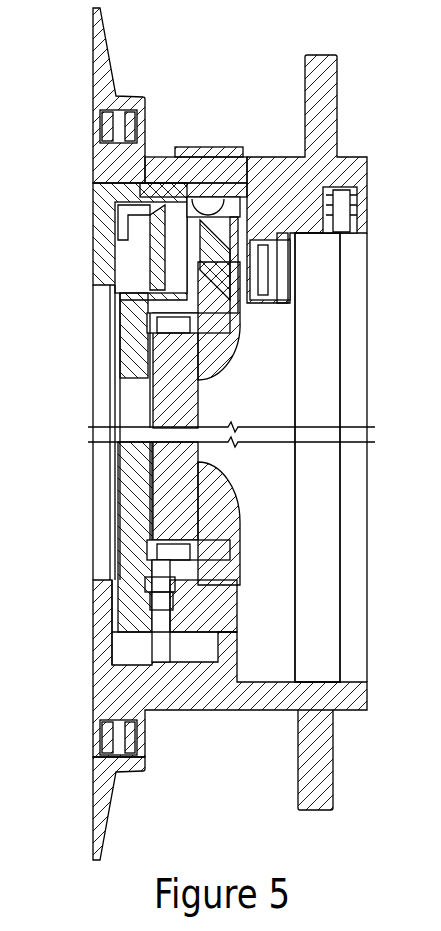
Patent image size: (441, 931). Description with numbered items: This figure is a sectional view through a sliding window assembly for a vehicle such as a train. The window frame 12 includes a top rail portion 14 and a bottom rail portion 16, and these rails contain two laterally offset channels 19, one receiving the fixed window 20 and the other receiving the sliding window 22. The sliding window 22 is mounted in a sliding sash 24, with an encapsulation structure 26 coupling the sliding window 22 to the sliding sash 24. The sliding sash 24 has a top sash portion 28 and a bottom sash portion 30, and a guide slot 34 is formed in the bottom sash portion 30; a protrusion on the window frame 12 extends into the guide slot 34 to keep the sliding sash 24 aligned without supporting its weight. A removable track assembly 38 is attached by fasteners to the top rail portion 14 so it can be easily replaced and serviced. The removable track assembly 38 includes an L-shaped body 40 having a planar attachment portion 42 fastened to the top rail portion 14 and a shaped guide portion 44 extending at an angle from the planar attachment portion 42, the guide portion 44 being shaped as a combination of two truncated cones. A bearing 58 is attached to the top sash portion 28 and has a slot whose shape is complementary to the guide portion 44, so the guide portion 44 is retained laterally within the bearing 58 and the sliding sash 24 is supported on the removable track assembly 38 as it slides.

The window frame 12 is at (339, 432).
The top rail portion 14 is at (340, 82).
The bottom rail portion 16 is at (352, 712).
The channels 19 is at (155, 183).
The fixed window 20 is at (330, 355).
The sliding window 22 is at (160, 415).
The sliding sash 24 is at (163, 373).
The encapsulation structure 26 is at (205, 355).
The top sash portion 28 is at (250, 187).
The bottom sash portion 30 is at (128, 550).
The guide slot 34 is at (140, 633).
The removable track assembly 38 is at (88, 210).
The L-shaped body 40 is at (193, 152).
The planar attachment portion 42 is at (173, 195).
The shaped guide portion 44 is at (93, 255).
The bearing 58 is at (135, 278).